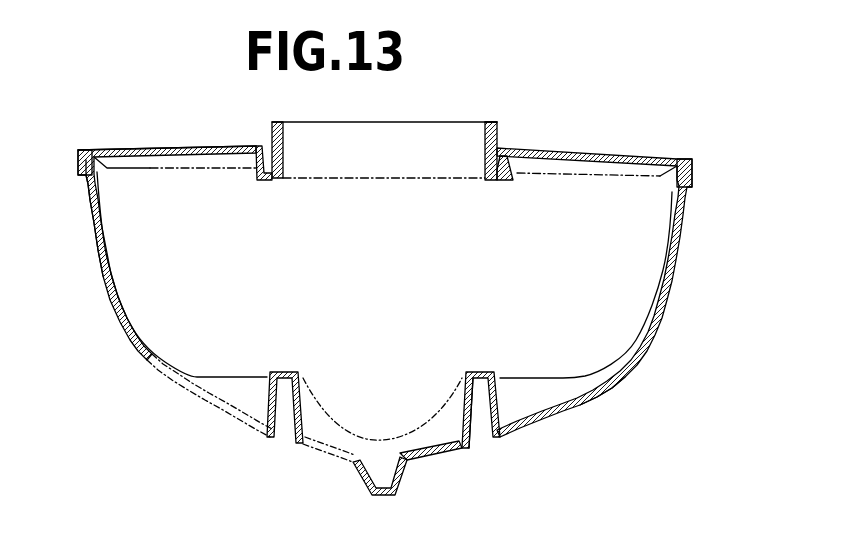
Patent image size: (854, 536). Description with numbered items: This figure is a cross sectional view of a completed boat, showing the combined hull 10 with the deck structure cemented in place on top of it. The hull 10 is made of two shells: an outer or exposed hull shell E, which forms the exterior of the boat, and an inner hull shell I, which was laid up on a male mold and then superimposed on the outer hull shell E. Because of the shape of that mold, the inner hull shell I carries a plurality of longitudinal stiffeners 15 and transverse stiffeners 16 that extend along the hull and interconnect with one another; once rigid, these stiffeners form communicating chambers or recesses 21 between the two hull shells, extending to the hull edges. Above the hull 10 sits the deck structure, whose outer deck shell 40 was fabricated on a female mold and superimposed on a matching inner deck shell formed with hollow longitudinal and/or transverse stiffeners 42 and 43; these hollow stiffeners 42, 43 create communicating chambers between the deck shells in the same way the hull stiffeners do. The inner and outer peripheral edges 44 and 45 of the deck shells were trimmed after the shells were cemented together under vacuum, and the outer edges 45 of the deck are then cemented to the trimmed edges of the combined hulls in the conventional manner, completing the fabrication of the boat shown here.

The hull 10 is at (112, 305).
The longitudinal stiffeners 15 is at (284, 372).
The transverse stiffeners 16 is at (122, 270).
The chambers or recesses 21 is at (480, 420).
The outer deck shell 40 is at (186, 147).
The hollow stiffeners 42 is at (265, 180).
The hollow stiffeners 43 is at (150, 168).
The inner peripheral edges 44 is at (83, 173).
The outer peripheral edges 45 is at (491, 121).
The outer hull shell E is at (95, 238).
The inner hull shell I is at (158, 340).